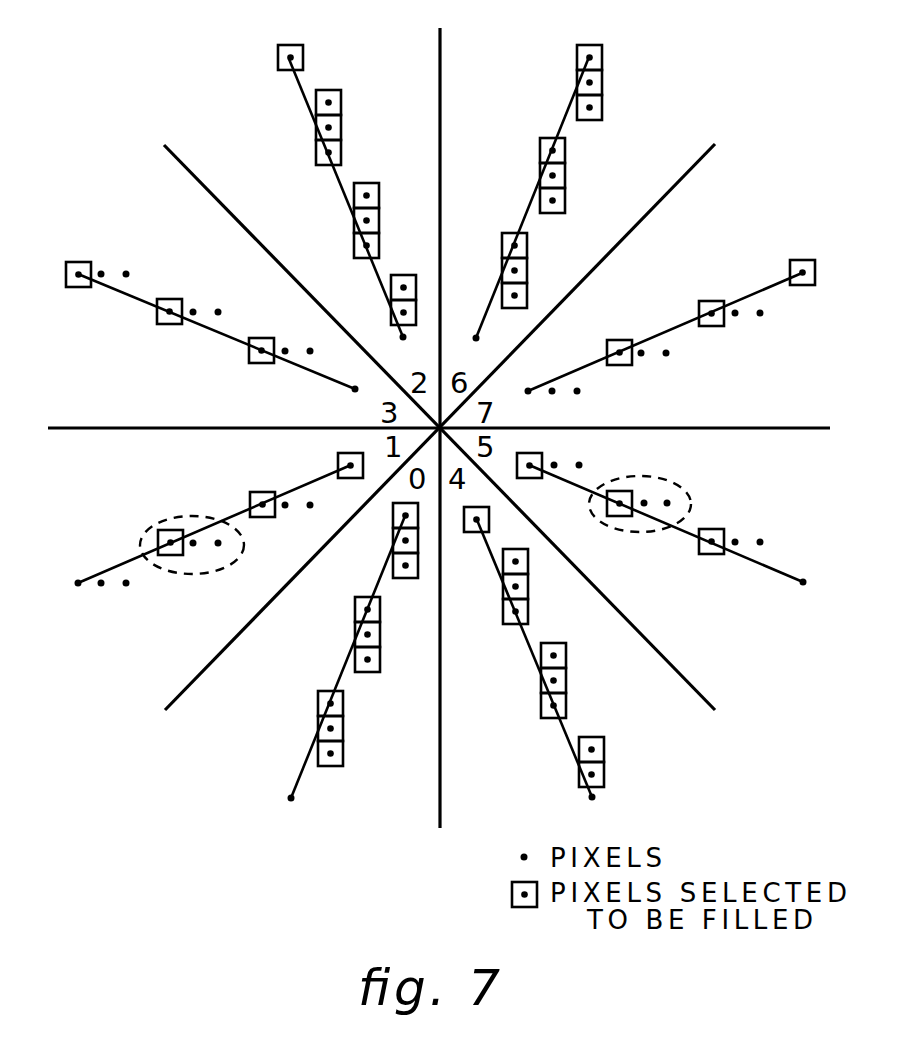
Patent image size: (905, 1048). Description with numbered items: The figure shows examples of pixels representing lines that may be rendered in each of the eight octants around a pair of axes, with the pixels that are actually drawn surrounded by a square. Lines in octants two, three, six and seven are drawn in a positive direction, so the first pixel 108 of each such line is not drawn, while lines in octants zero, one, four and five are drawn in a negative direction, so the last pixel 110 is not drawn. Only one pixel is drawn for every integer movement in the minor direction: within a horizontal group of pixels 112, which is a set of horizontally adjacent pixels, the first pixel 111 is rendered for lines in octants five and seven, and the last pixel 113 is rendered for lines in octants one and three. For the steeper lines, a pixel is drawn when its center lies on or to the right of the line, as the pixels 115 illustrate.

The first pixel 108 is at (403, 337).
The last pixel 110 is at (78, 583).
The first pixel of horizontal group 111 is at (620, 365).
The horizontal group of pixels 112 is at (165, 524).
The last pixel of horizontal group 113 is at (170, 325).
The pixels 115 is at (565, 177).